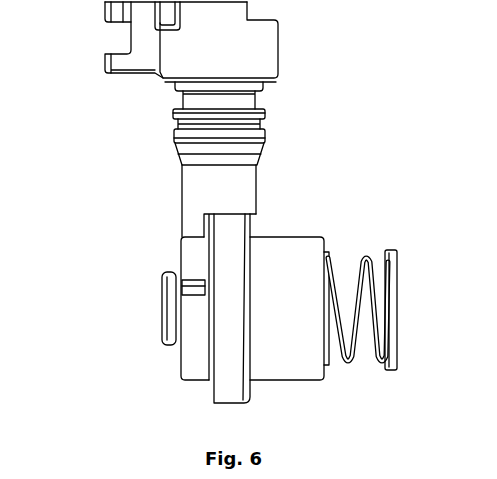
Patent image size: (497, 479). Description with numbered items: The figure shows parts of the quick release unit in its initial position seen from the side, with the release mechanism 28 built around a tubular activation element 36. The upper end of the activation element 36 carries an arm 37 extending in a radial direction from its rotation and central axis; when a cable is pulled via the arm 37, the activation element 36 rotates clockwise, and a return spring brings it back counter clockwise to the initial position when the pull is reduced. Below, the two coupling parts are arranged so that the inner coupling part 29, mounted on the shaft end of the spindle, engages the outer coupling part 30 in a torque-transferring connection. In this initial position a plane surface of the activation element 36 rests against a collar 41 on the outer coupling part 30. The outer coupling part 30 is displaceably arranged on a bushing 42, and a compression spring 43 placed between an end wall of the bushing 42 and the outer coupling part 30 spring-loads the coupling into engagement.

The release mechanism 28 is at (315, 67).
The inner coupling part 29 is at (182, 283).
The outer coupling part 30 is at (278, 248).
The activation element 36 is at (183, 139).
The arm 37 is at (105, 64).
The collar 41 is at (225, 393).
The bushing 42 is at (357, 342).
The compression spring 43 is at (365, 263).